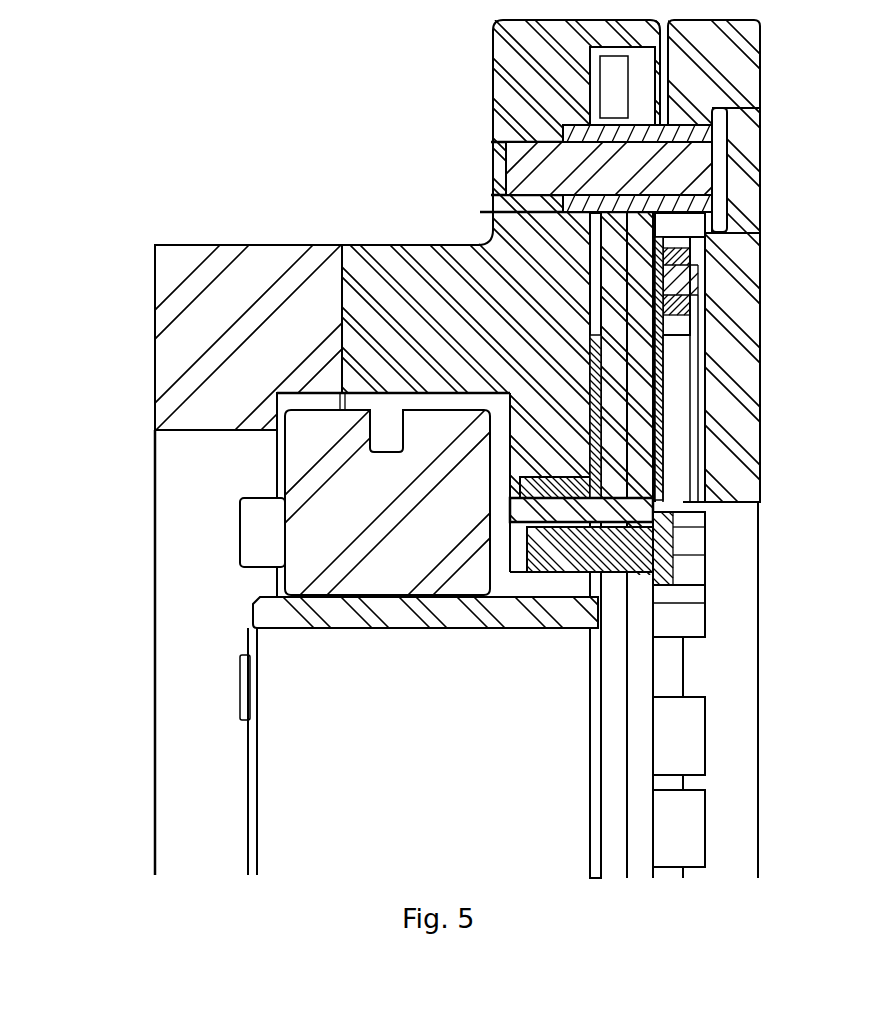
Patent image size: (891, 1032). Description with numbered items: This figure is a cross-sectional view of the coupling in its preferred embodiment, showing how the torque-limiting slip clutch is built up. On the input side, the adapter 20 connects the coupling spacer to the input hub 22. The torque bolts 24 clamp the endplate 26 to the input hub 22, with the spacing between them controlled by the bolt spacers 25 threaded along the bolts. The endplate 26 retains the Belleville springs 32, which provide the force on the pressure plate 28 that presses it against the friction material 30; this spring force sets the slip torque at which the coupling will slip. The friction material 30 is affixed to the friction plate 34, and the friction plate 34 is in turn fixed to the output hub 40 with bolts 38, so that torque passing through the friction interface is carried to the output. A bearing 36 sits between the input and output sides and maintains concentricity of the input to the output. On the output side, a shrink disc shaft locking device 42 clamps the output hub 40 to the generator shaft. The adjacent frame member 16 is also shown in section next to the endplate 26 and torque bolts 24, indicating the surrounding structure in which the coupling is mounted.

The frame member 16 is at (745, 50).
The adapter 20 is at (190, 270).
The input hub 22 is at (487, 270).
The torque bolts 24 is at (727, 167).
The bolt spacers 25 is at (677, 133).
The endplate 26 is at (727, 280).
The pressure plate 28 is at (665, 322).
The friction material 30 is at (660, 390).
The Belleville springs 32 is at (693, 443).
The friction plate 34 is at (637, 458).
The bearing 36 is at (558, 487).
The bolts 38 is at (637, 552).
The output hub 40 is at (276, 609).
The shrink disc shaft locking device 42 is at (325, 483).